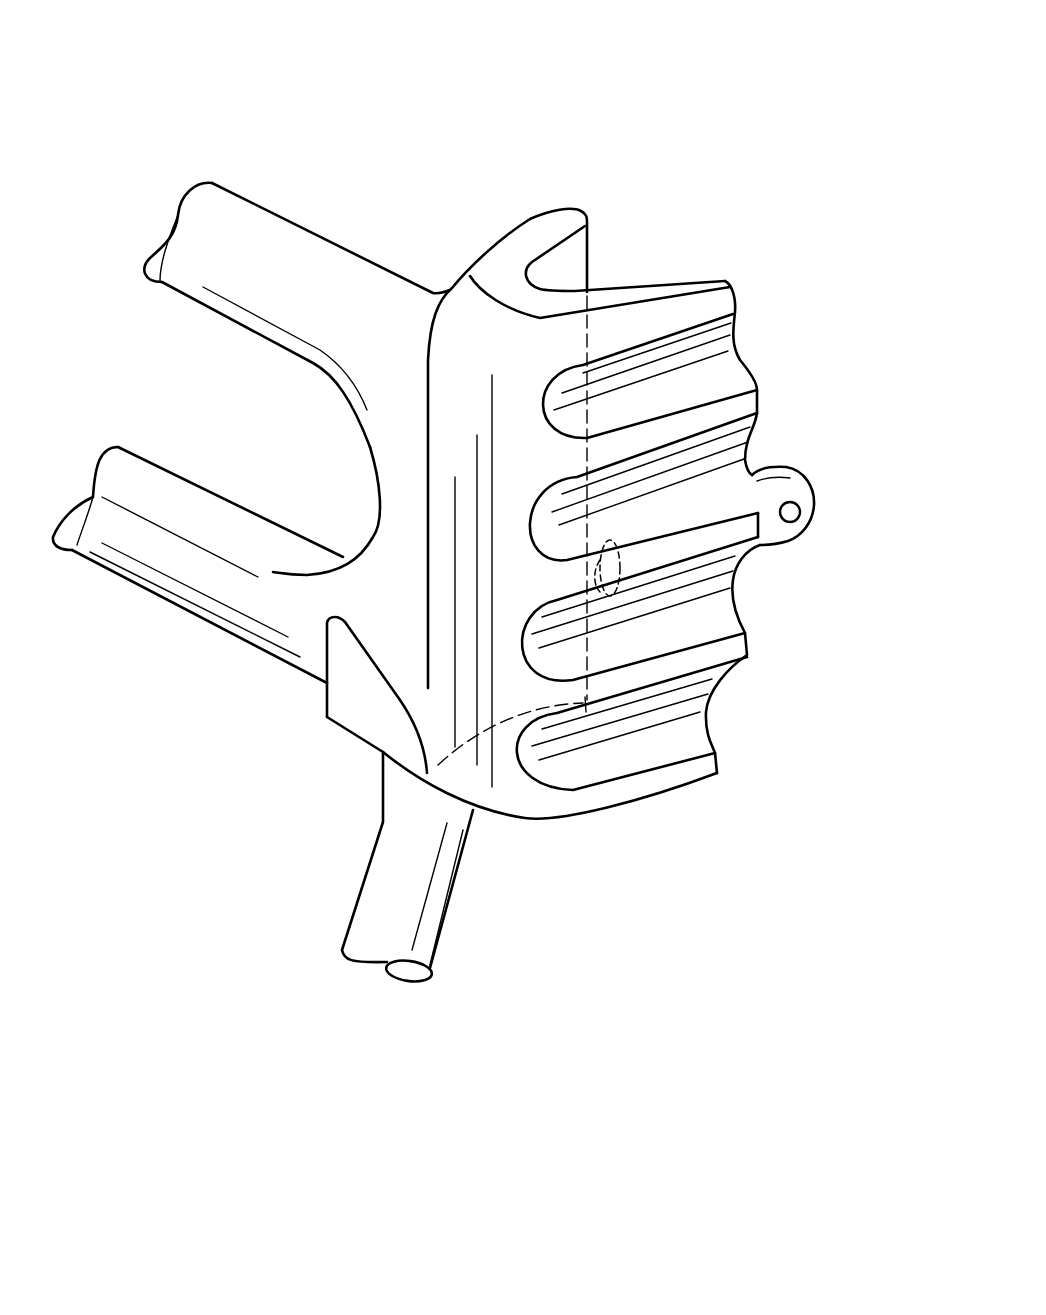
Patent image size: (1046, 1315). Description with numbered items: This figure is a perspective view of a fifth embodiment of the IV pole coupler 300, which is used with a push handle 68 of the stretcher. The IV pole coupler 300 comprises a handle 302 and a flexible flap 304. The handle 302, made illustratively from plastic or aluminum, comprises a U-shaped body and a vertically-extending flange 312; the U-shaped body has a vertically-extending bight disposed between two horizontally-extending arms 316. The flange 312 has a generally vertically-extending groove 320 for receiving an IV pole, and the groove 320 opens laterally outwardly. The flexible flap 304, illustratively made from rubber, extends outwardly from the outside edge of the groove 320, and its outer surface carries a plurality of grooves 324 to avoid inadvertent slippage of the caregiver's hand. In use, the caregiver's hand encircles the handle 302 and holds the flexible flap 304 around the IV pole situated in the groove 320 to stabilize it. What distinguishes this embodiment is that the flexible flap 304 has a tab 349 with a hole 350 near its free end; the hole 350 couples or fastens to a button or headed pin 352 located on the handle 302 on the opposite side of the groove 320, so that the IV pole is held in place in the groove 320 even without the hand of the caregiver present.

The IV pole coupler 300 is at (533, 122).
The handle 302 is at (330, 235).
The flexible flap 304 is at (763, 654).
The vertically-extending flange 312 is at (440, 556).
The horizontally-extending arms 316 is at (232, 210).
The vertically-extending groove 320 is at (548, 275).
The grooves 324 is at (717, 365).
The tab 349 is at (800, 532).
The hole 350 is at (803, 511).
The headed pin 352 is at (632, 572).
The push handle 68 is at (360, 880).